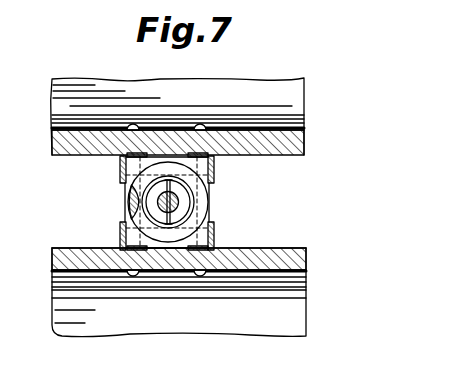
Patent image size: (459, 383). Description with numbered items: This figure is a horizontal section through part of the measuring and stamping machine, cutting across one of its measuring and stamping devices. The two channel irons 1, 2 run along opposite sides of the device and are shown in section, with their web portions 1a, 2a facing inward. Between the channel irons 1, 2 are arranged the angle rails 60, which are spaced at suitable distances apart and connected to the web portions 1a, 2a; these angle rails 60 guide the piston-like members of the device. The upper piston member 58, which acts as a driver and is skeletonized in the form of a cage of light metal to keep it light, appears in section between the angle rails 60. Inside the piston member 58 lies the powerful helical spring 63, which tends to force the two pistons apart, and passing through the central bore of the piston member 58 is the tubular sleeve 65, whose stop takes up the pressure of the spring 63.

The channel iron 1 is at (264, 85).
The web portion 1a is at (63, 147).
The channel iron 2 is at (293, 318).
The web portion 2a is at (272, 252).
The upper piston member 58 is at (203, 222).
The angle rails 60 is at (120, 170).
The helical spring 63 is at (202, 202).
The tubular sleeve 65 is at (173, 193).